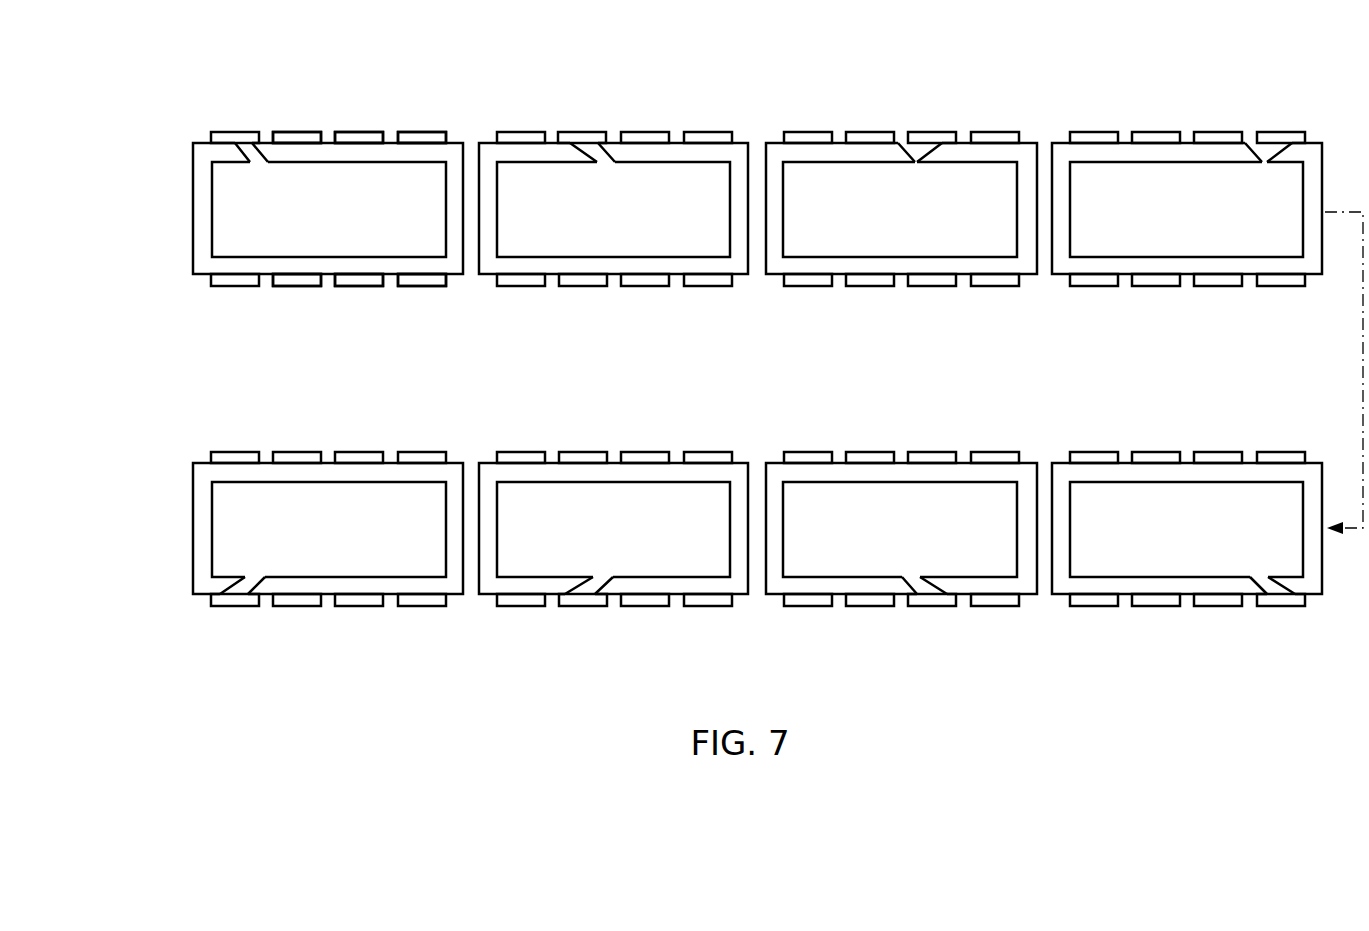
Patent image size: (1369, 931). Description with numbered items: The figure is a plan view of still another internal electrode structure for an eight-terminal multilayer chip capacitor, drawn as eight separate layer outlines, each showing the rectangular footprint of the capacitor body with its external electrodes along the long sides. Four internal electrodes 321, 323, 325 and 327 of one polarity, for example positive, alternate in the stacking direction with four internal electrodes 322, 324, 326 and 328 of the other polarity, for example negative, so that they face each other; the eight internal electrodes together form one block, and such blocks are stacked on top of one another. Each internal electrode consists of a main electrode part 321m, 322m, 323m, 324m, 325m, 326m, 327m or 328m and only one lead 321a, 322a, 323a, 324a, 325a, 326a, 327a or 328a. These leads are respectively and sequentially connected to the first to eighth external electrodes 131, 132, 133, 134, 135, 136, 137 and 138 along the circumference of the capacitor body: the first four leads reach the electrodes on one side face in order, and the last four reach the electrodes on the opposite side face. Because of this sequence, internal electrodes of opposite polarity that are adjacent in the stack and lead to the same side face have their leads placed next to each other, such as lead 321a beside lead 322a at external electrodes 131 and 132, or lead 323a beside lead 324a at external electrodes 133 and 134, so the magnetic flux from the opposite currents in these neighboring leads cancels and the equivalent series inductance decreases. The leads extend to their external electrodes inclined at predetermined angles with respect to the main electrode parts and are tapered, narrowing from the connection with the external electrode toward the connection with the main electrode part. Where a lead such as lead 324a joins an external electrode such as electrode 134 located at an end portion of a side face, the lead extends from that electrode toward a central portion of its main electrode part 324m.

The first external electrode 131 is at (233, 135).
The second external electrode 132 is at (296, 135).
The third external electrode 133 is at (357, 135).
The fourth external electrode 134 is at (421, 135).
The fifth external electrode 135 is at (425, 287).
The sixth external electrode 136 is at (361, 287).
The seventh external electrode 137 is at (307, 287).
The eighth external electrode 138 is at (236, 287).
The first internal electrode 321 is at (275, 196).
The lead of first internal electrode 321a is at (228, 153).
The main electrode part of first internal electrode 321m is at (242, 240).
The second internal electrode 322 is at (622, 212).
The lead of second internal electrode 322a is at (600, 155).
The main electrode part of second internal electrode 322m is at (613, 247).
The third internal electrode 323 is at (907, 214).
The lead of third internal electrode 323a is at (907, 157).
The main electrode part of third internal electrode 323m is at (865, 245).
The fourth internal electrode 324 is at (1186, 214).
The lead of fourth internal electrode 324a is at (1253, 155).
The main electrode part of fourth internal electrode 324m is at (1150, 245).
The fifth internal electrode 325 is at (1186, 533).
The lead of fifth internal electrode 325a is at (1262, 583).
The main electrode part of fifth internal electrode 325m is at (1102, 567).
The sixth internal electrode 326 is at (910, 531).
The lead of sixth internal electrode 326a is at (912, 583).
The main electrode part of sixth internal electrode 326m is at (995, 568).
The seventh internal electrode 327 is at (607, 532).
The lead of seventh internal electrode 327a is at (583, 582).
The main electrode part of seventh internal electrode 327m is at (675, 568).
The eighth internal electrode 328 is at (329, 530).
The lead of eighth internal electrode 328a is at (257, 582).
The main electrode part of eighth internal electrode 328m is at (387, 555).